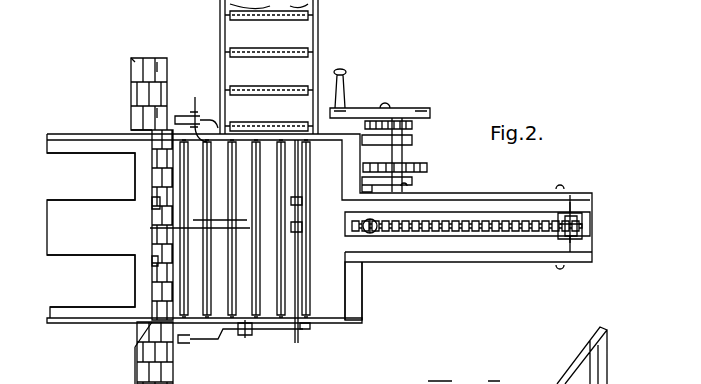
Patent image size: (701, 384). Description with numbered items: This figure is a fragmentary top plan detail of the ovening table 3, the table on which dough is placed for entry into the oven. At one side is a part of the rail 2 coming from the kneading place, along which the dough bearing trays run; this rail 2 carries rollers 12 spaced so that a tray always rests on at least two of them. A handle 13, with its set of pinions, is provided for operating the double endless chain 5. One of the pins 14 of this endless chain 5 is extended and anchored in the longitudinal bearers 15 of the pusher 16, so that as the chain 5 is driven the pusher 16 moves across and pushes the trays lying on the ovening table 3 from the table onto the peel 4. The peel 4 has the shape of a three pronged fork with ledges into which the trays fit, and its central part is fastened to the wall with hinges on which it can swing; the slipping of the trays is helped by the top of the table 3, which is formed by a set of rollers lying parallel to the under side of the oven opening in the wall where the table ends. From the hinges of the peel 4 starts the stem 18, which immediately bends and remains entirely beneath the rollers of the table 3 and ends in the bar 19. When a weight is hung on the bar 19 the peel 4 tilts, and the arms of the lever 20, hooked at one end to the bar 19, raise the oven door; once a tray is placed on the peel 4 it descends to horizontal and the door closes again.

The rail 2 is at (269, 67).
The ovening table 3 is at (197, 108).
The peel 4 is at (91, 230).
The double endless chain 5 is at (310, 327).
The rollers 12 is at (269, 71).
The handle 13 is at (380, 130).
The pin 14 is at (522, 208).
The longitudinal bearers 15 is at (590, 221).
The pusher 16 is at (341, 276).
The stem 18 is at (212, 228).
The bar 19 is at (297, 303).
The lever 20 is at (222, 339).